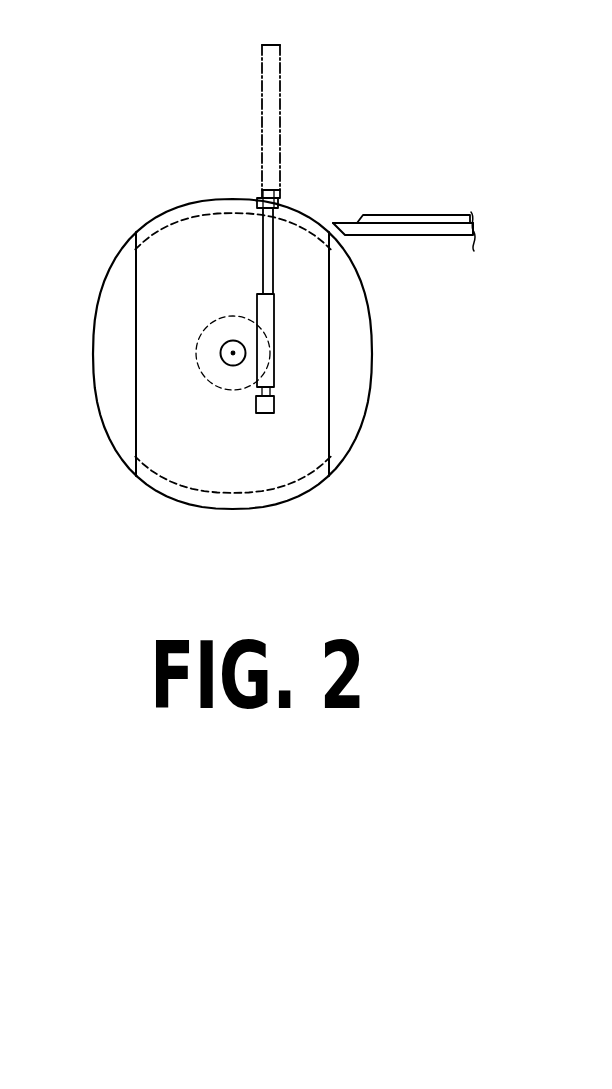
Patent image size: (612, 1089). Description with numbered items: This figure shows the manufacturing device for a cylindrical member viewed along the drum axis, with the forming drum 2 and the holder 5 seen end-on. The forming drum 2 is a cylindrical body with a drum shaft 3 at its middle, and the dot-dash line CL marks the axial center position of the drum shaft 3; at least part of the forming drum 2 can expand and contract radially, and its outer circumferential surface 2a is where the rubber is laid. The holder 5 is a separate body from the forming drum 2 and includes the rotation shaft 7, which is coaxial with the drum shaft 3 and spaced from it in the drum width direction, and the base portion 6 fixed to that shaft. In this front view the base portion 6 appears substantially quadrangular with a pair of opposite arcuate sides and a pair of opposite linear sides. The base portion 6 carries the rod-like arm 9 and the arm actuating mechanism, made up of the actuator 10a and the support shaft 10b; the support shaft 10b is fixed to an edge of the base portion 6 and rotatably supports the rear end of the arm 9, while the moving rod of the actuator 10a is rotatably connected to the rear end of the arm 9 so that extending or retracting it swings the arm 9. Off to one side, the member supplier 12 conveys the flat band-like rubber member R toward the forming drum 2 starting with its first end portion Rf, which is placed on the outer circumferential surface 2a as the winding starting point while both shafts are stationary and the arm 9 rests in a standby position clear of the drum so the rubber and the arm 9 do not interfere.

The forming drum 2 is at (113, 290).
The outer circumferential surface 2a is at (108, 413).
The drum shaft 3 is at (207, 355).
The holder 5 is at (133, 205).
The base portion 6 is at (318, 424).
The rotation shaft 7 is at (228, 368).
The arm 9 is at (268, 87).
The actuator 10a is at (265, 321).
The support shaft 10b is at (277, 196).
The member supplier 12 is at (412, 235).
The band-like rubber member R is at (437, 215).
The first end portion Rf is at (373, 218).
The axial center position CL is at (233, 353).